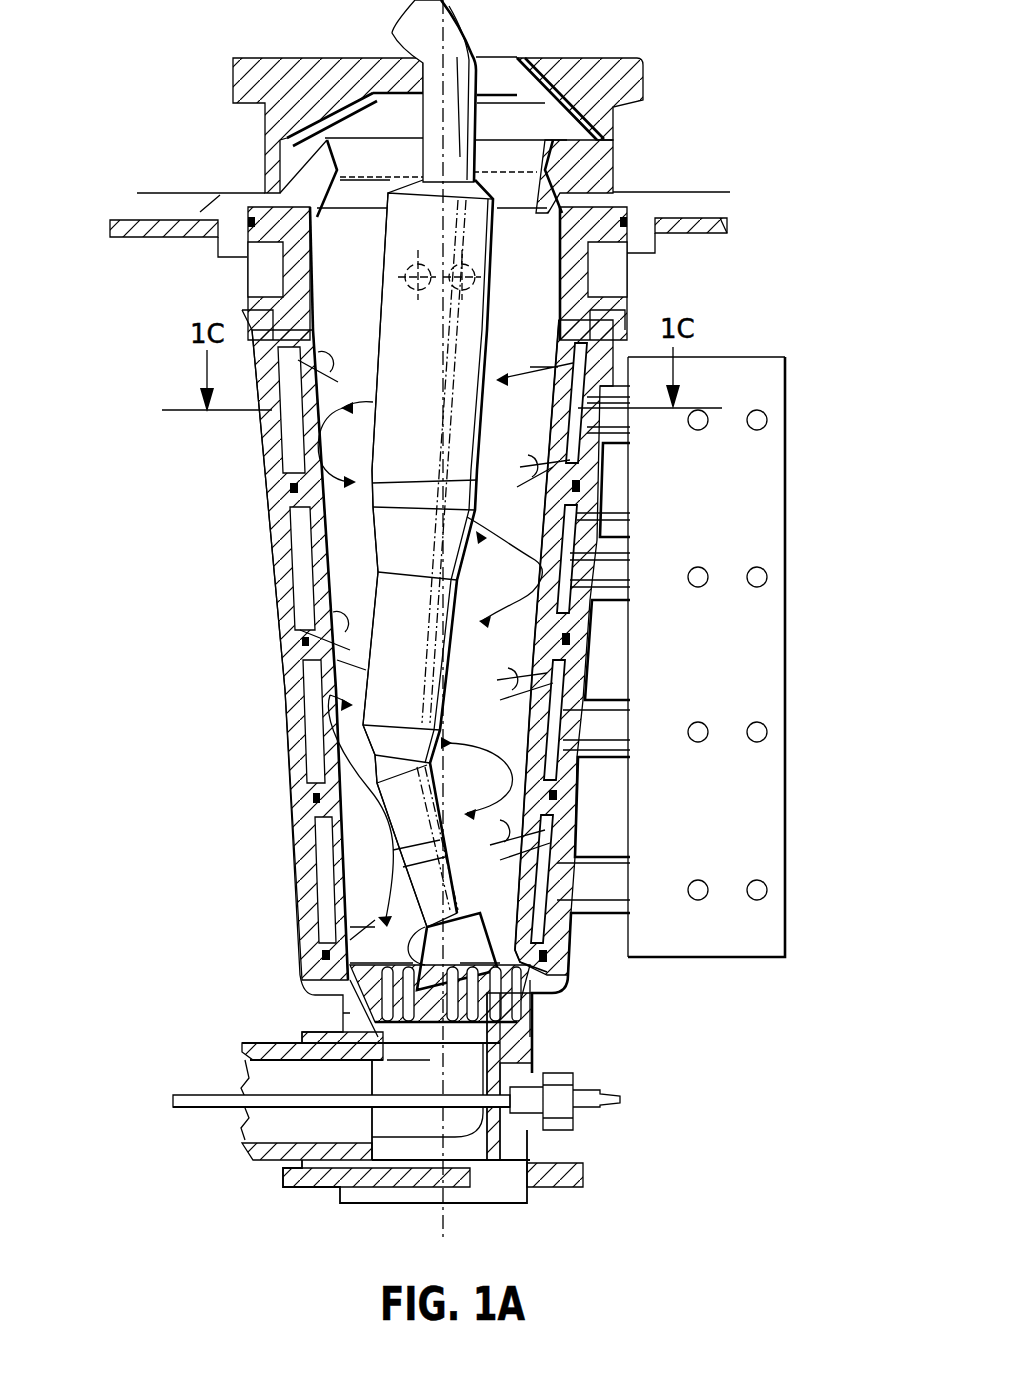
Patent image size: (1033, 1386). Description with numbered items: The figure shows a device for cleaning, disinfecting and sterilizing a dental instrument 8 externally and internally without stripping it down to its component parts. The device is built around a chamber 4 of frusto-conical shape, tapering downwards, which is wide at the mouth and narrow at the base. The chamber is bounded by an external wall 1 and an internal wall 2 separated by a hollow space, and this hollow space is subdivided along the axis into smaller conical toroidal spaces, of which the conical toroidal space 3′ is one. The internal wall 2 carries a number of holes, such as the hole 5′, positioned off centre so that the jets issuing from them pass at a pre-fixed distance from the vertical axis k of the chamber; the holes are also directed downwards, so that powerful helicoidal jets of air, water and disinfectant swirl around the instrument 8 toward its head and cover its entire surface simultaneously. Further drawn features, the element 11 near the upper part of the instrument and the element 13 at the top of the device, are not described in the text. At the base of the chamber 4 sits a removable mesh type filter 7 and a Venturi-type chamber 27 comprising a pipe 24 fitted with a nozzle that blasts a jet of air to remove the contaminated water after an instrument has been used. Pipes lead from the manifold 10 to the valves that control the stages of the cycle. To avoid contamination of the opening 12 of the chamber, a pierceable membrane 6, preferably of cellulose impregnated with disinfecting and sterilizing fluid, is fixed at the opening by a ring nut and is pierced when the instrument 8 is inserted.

The external wall 1 is at (257, 320).
The internal wall 2 is at (587, 303).
The conical toroidal space 3′ is at (293, 458).
The chamber 4 is at (333, 405).
The hole 5′ is at (628, 363).
The pierceable membrane 6 is at (693, 192).
The mesh type filter 7 is at (483, 1010).
The instrument 8 is at (447, 30).
The manifold 10 is at (730, 947).
The bores 11 is at (560, 279).
The opening 12 is at (300, 172).
The flange 13 is at (587, 97).
The pipe 24 is at (213, 1108).
The chamber 27 is at (480, 1137).
The vertical axis k is at (425, 585).